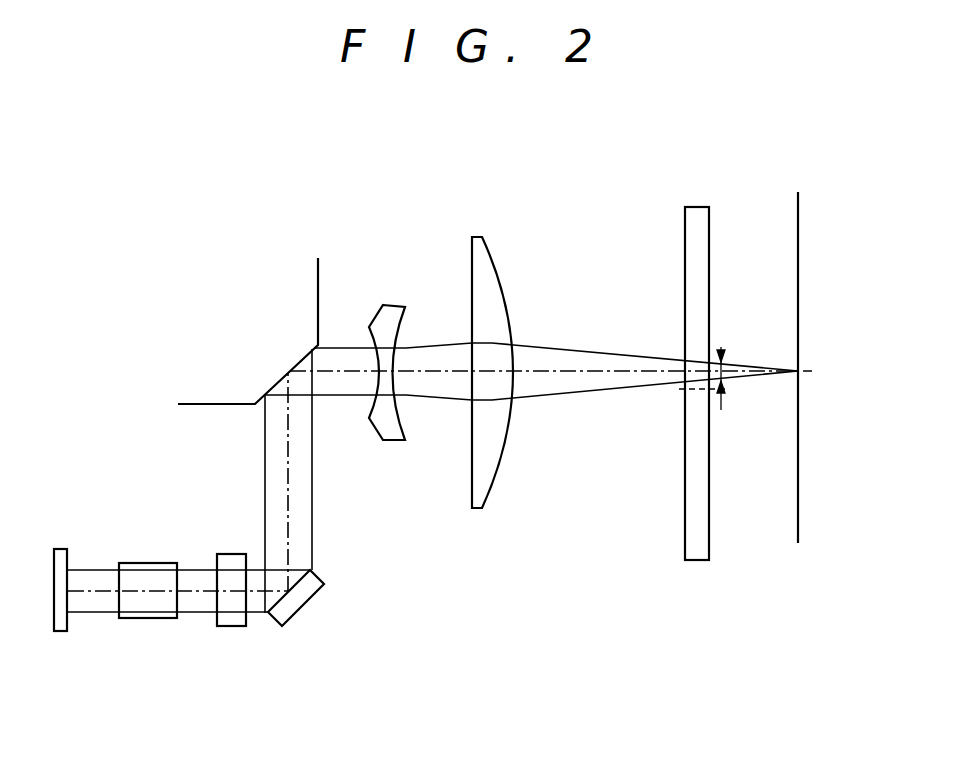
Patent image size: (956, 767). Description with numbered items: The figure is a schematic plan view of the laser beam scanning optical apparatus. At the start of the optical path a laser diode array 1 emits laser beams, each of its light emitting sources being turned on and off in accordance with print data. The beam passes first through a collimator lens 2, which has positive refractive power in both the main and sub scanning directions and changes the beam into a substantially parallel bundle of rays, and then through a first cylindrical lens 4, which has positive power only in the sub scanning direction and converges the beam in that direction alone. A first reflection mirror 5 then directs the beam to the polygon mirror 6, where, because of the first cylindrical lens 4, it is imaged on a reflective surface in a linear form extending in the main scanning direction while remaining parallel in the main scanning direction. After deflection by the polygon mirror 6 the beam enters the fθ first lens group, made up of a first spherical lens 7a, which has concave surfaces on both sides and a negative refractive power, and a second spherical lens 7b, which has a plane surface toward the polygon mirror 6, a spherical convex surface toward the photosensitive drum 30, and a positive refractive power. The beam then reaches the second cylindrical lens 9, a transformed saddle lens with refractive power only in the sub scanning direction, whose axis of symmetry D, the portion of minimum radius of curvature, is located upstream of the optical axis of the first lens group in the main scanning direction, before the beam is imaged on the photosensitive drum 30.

The laser diode array 1 is at (63, 632).
The collimator lens 2 is at (147, 619).
The first cylindrical lens 4 is at (233, 627).
The first reflection mirror 5 is at (305, 605).
The polygon mirror 6 is at (207, 410).
The first spherical lens 7a is at (393, 303).
The second spherical lens 7b is at (478, 235).
The second cylindrical lens 9 is at (695, 205).
The photosensitive drum 30 is at (800, 485).
The axis of symmetry of the second cylindrical lens D is at (713, 398).